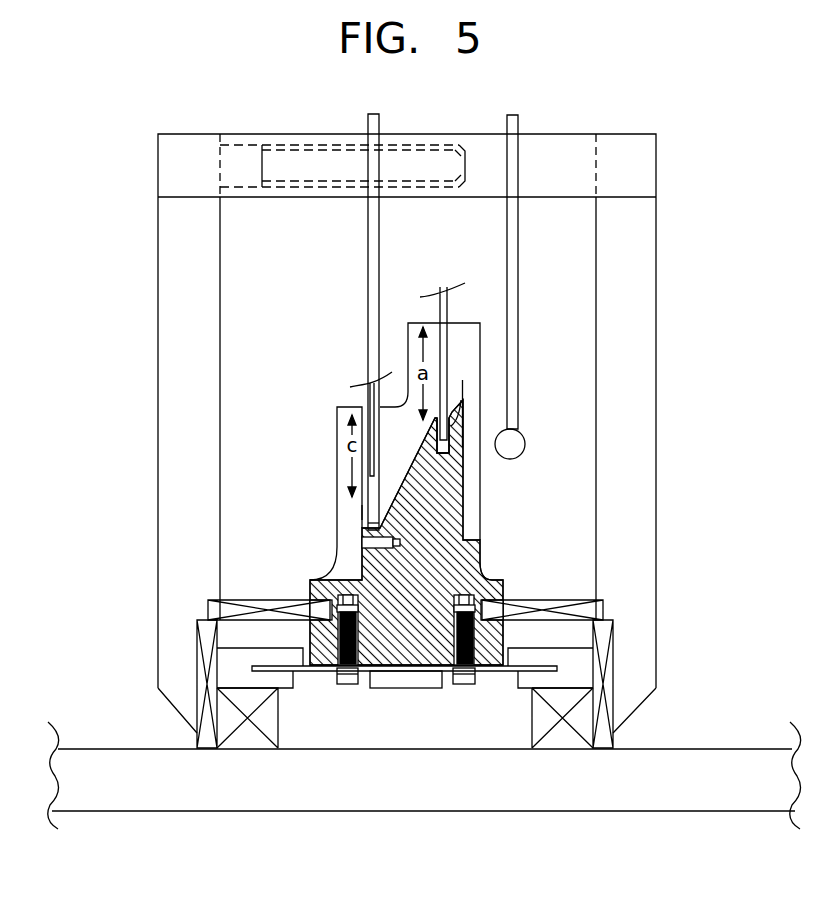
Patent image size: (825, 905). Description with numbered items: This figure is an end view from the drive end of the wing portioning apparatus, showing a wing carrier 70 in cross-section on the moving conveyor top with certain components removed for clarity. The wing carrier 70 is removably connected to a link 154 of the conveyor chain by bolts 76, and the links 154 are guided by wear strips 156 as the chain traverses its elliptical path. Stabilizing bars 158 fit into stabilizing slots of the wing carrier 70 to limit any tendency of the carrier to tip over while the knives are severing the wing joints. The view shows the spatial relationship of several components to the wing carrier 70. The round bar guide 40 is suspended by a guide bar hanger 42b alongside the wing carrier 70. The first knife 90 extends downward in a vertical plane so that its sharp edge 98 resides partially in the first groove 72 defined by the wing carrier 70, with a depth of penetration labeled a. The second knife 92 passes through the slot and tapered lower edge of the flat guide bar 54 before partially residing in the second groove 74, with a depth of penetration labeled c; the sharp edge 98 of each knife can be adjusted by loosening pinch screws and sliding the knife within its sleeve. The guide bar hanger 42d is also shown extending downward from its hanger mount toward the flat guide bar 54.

The round bar guide 40 is at (524, 447).
The guide bar hanger 42b is at (520, 347).
The guide bar hanger 42d is at (366, 330).
The flat guide bar 54 is at (364, 400).
The wing carrier 70 is at (497, 545).
The first groove 72 is at (452, 448).
The second groove 74 is at (366, 523).
The bolts 76 is at (456, 690).
The first knife 90 is at (449, 312).
The second knife 92 is at (361, 494).
The sharp edge 98 is at (366, 512).
The link 154 is at (506, 675).
The wear strips 156 is at (240, 673).
The stabilizing bars 158 is at (206, 605).